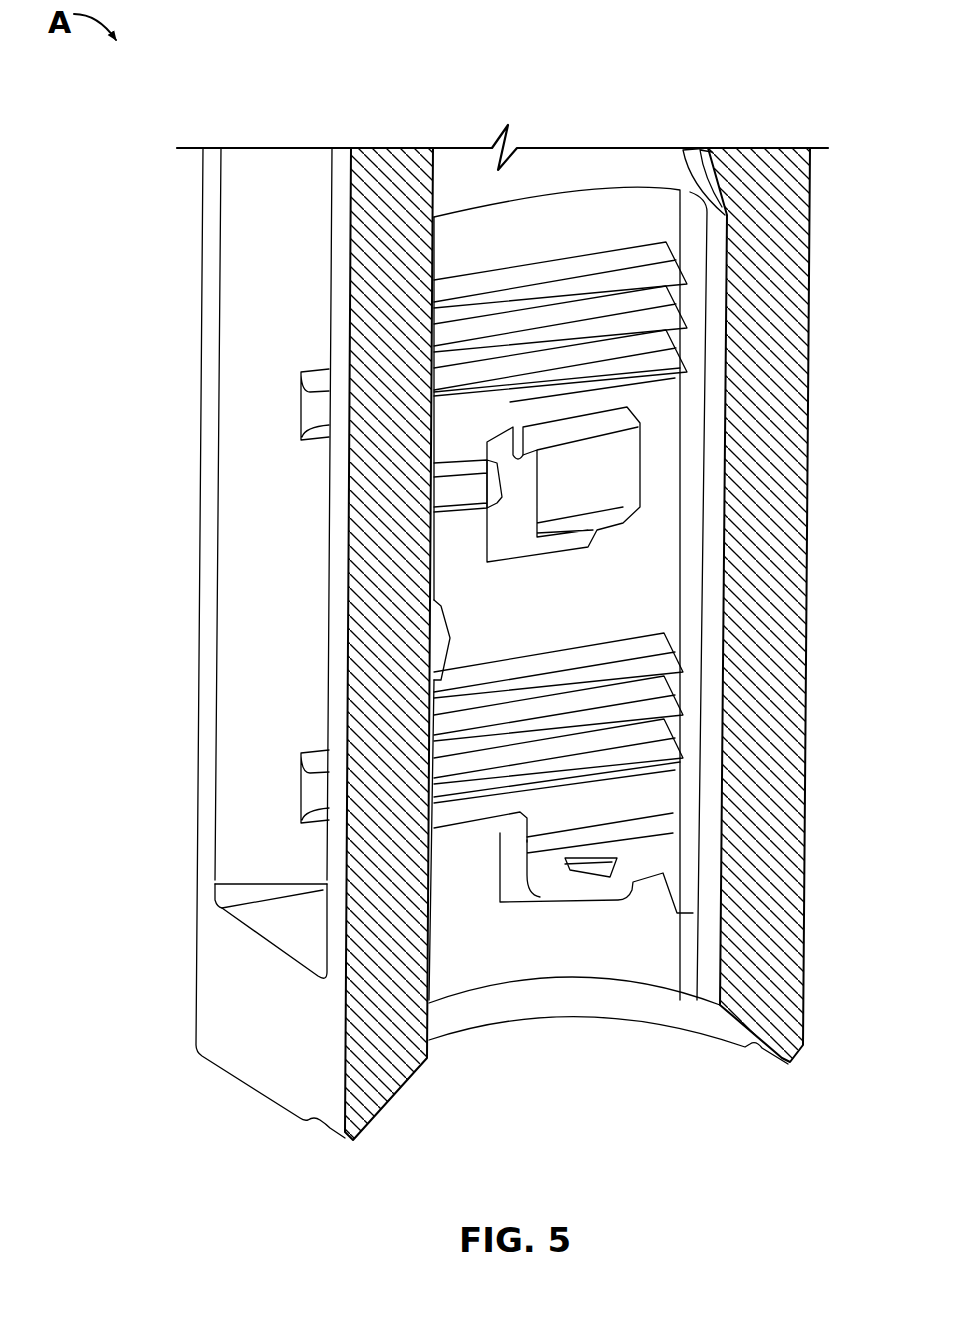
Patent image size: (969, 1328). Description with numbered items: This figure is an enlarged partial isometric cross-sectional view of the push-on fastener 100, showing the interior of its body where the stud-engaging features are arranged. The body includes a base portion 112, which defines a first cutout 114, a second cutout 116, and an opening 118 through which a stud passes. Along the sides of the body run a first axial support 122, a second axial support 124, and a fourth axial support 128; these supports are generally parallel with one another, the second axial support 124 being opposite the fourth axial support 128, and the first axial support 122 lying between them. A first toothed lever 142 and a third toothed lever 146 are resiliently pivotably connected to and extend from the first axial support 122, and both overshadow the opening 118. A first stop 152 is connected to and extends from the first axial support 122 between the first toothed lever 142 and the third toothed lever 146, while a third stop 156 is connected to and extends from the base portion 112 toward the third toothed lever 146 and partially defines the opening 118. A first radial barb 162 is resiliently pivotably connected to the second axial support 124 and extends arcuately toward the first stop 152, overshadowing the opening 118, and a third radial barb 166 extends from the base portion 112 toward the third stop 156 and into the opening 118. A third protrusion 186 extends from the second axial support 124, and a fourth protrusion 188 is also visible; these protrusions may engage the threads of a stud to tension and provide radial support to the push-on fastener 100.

The push-on fastener 100 is at (190, 112).
The base portion 112 is at (238, 1020).
The first cutout 114 is at (314, 1146).
The second cutout 116 is at (760, 1062).
The opening 118 is at (537, 1044).
The first axial support 122 is at (282, 230).
The second axial support 124 is at (372, 372).
The fourth axial support 128 is at (795, 294).
The first toothed lever 142 is at (493, 342).
The third toothed lever 146 is at (463, 730).
The first stop 152 is at (627, 475).
The third stop 156 is at (460, 882).
The first radial barb 162 is at (467, 495).
The third radial barb 166 is at (635, 868).
The third protrusion 186 is at (425, 602).
The fourth protrusion 188 is at (762, 158).